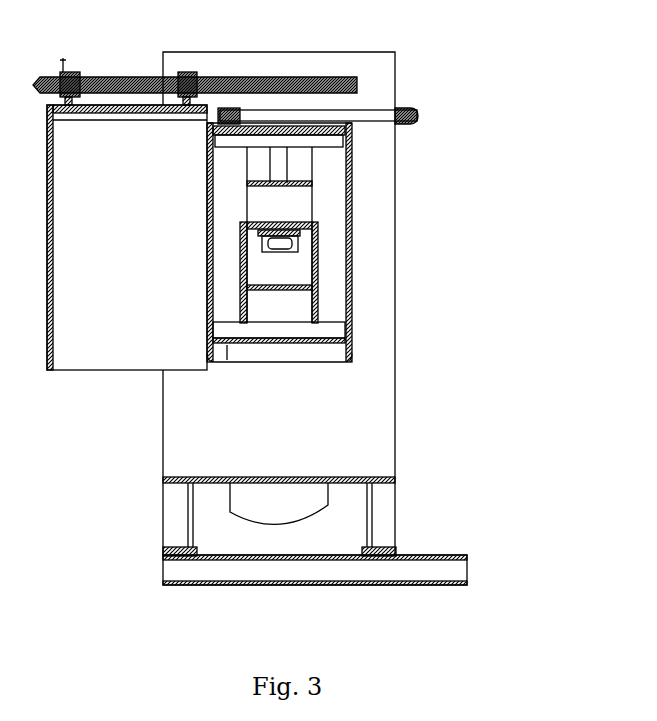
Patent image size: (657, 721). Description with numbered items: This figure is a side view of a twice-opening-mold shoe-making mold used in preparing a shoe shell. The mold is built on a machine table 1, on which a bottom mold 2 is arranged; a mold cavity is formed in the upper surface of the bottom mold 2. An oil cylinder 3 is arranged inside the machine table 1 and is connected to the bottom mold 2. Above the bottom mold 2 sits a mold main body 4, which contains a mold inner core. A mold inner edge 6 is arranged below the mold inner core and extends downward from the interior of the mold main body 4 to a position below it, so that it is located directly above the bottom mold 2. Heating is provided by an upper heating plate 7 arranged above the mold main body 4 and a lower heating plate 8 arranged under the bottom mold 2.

The machine table 1 is at (172, 460).
The bottom mold 2 is at (297, 308).
The oil cylinder 3 is at (253, 500).
The mold main body 4 is at (300, 202).
The mold inner edge 6 is at (297, 255).
The upper heating plate 7 is at (345, 118).
The lower heating plate 8 is at (300, 332).